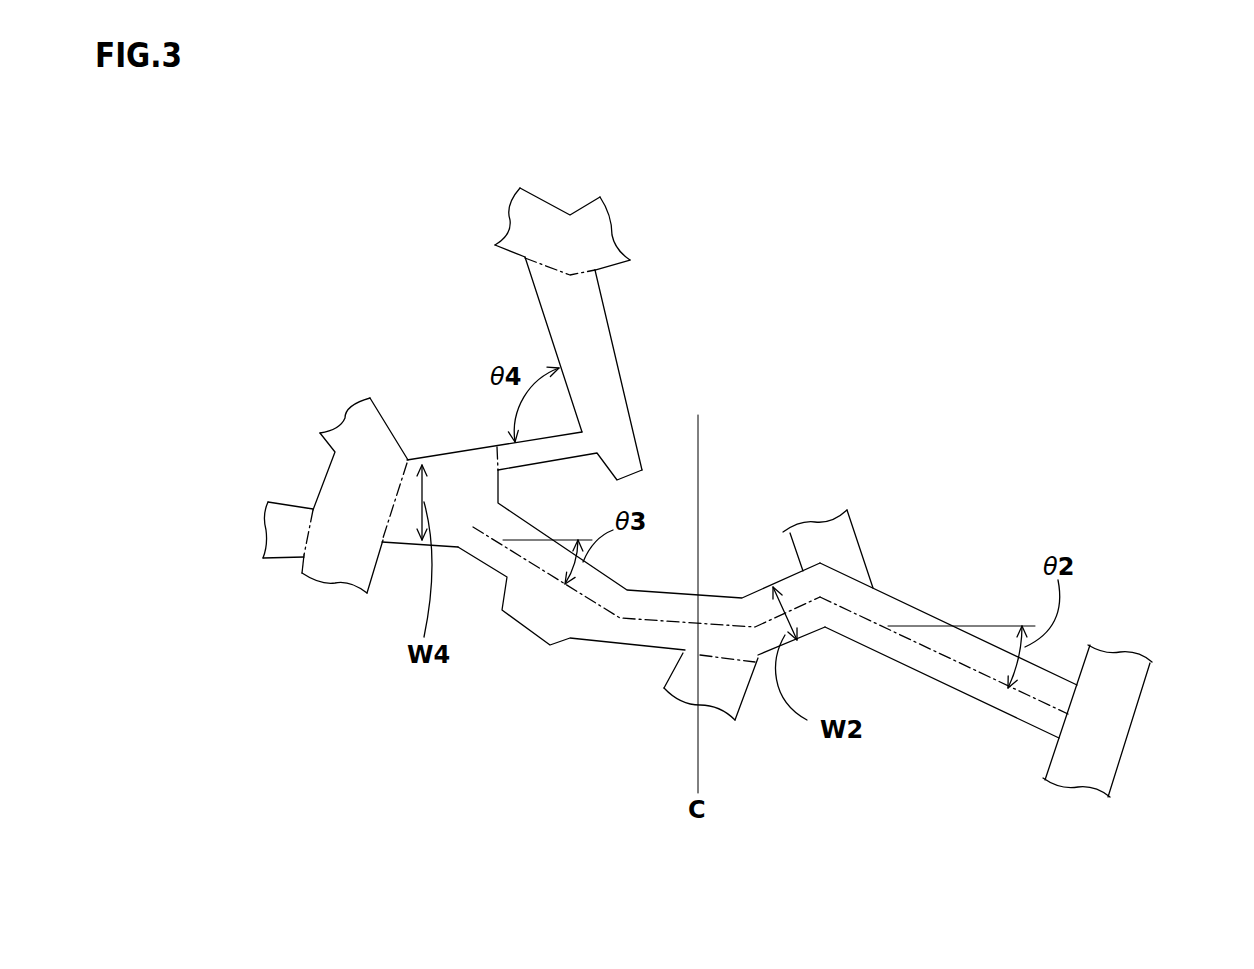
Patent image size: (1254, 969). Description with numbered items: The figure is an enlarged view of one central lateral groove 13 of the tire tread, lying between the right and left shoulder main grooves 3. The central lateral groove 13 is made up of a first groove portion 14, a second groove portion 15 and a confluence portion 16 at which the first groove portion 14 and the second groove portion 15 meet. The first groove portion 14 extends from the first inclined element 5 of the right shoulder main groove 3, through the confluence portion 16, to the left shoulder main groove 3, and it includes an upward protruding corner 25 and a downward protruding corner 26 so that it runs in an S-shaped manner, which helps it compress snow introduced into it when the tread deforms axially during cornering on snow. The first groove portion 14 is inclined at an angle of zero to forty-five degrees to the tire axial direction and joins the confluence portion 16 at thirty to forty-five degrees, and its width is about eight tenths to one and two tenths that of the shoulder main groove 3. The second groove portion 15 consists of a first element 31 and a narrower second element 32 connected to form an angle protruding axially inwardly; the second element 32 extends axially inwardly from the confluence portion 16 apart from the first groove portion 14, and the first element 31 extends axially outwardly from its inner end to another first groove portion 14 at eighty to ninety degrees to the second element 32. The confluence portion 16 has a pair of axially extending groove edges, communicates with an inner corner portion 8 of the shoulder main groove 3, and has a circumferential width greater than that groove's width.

The shoulder main groove 3 is at (340, 550).
The first inclined element 5 is at (1100, 730).
The inner corner portion 8 is at (402, 463).
The central lateral groove 13 is at (535, 230).
The first groove portion 14 is at (622, 605).
The second groove portion 15 is at (673, 368).
The confluence portion 16 is at (450, 492).
The upward protruding corner 25 is at (843, 590).
The downward protruding corner 26 is at (740, 665).
The first element 31 is at (593, 340).
The second element 32 is at (540, 450).